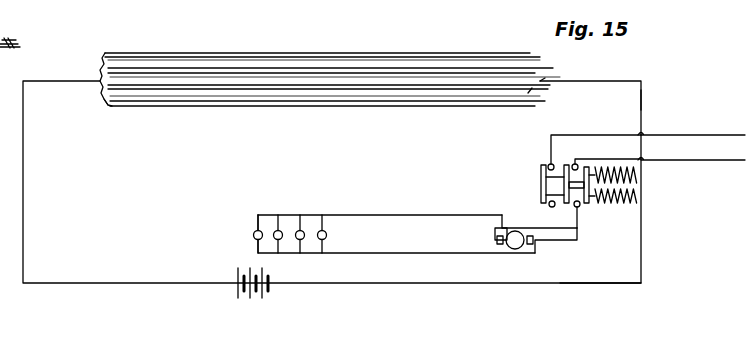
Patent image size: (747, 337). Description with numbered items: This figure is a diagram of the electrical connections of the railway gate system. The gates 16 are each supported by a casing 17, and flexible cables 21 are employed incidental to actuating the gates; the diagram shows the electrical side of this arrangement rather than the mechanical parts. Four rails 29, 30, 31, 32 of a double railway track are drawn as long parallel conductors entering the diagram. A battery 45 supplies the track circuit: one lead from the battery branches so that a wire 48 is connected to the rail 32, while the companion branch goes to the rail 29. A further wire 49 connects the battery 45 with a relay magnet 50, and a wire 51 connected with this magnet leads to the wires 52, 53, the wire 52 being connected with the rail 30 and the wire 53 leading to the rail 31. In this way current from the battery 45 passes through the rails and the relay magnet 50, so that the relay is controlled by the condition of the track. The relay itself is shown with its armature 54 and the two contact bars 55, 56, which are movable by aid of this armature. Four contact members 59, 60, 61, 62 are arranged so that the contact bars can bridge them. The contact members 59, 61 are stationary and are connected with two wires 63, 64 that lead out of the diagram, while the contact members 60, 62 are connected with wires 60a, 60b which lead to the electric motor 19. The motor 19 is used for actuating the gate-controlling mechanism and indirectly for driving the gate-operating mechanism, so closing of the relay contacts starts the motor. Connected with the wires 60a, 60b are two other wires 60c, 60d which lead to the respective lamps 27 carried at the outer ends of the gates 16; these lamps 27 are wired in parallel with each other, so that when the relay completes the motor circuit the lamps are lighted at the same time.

The gate 16 is at (25, 242).
The casing 17 is at (101, 63).
The electric motor 19 is at (513, 249).
The flexible cables 21 is at (6, 42).
The electric lamps 27 is at (253, 235).
The rail 29 is at (198, 55).
The rail 30 is at (229, 72).
The rail 31 is at (270, 90).
The rail 32 is at (340, 103).
The battery 45 is at (249, 272).
The wire 48 is at (106, 100).
The wire 49 is at (585, 283).
The relay magnet 50 is at (638, 175).
The wire 51 is at (645, 102).
The wire 52 is at (532, 88).
The wire 53 is at (532, 88).
The armature 54 is at (590, 205).
The contact bar 55 is at (564, 178).
The contact bar 56 is at (564, 190).
The contact member 59 is at (549, 164).
The contact member 60 is at (553, 207).
The wire 60a is at (545, 227).
The wire 60b is at (548, 236).
The wire 60c is at (419, 200).
The wire 60d is at (435, 253).
The contact member 61 is at (575, 164).
The contact member 62 is at (578, 207).
The wire 63 is at (673, 135).
The wire 64 is at (686, 160).